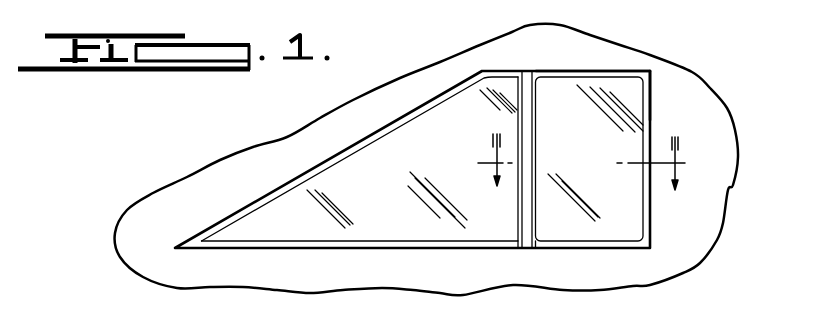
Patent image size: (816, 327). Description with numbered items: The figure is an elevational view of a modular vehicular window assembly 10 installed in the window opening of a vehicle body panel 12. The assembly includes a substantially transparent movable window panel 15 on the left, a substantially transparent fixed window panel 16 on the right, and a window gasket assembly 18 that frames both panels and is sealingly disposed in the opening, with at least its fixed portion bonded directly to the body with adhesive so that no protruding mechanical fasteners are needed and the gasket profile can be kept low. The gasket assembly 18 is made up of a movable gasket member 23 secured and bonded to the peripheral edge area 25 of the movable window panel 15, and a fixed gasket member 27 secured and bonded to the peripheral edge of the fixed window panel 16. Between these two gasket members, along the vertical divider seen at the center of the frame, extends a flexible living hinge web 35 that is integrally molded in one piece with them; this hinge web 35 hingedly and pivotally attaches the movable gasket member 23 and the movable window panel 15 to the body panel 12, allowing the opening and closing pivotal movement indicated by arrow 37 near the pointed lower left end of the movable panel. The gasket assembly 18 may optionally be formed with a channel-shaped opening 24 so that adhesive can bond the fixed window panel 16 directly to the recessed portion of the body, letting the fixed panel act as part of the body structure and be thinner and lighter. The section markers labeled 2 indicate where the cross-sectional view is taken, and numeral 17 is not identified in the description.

The modular vehicular window assembly 10 is at (423, 101).
The vehicle body panel 12 is at (701, 109).
The movable window panel 15 is at (373, 218).
The fixed window panel 16 is at (610, 217).
The window gasket assembly 18 is at (581, 74).
The movable gasket member 23 is at (328, 161).
The fixed gasket member 27 is at (620, 72).
The flexible living hinge web 35 is at (527, 80).
The arrow 37 is at (298, 225).
The section line 2- 2 is at (580, 163).
The peripheral edge area of the movable window panel 25 is at (203, 317).
The channel-shaped opening 24 is at (646, 317).
The frame member 17 is at (777, 320).